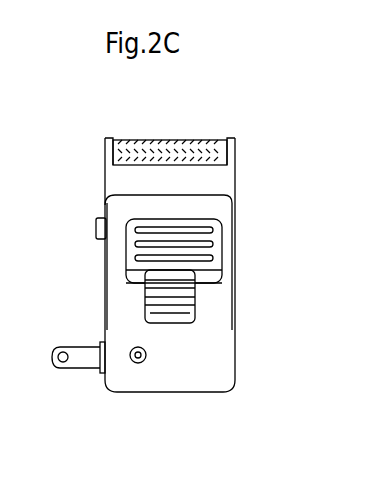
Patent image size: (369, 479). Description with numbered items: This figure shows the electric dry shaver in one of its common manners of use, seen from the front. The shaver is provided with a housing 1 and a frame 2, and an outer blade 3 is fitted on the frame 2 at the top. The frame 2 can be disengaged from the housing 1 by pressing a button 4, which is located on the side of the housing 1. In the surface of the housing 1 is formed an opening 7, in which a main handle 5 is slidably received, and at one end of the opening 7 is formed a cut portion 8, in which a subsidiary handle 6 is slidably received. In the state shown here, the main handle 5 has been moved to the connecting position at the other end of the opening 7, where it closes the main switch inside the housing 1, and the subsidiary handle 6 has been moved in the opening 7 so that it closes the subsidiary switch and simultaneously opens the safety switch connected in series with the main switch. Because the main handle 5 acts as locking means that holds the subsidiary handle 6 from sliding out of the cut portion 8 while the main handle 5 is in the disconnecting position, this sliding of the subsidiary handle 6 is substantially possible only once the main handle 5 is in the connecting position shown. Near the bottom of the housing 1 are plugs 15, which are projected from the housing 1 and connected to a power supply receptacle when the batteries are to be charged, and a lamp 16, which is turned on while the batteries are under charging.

The housing 1 is at (117, 208).
The frame 2 is at (112, 180).
The outer blade 3 is at (157, 137).
The button 4 is at (96, 227).
The main handle 5 is at (133, 258).
The subsidiary handle 6 is at (150, 294).
The opening 7 is at (133, 276).
The cut portion 8 is at (172, 313).
The plugs 15 is at (82, 362).
The lamp 16 is at (138, 363).